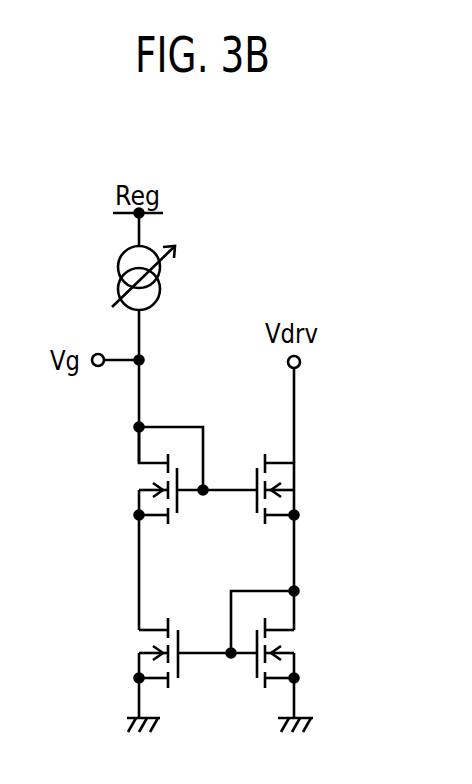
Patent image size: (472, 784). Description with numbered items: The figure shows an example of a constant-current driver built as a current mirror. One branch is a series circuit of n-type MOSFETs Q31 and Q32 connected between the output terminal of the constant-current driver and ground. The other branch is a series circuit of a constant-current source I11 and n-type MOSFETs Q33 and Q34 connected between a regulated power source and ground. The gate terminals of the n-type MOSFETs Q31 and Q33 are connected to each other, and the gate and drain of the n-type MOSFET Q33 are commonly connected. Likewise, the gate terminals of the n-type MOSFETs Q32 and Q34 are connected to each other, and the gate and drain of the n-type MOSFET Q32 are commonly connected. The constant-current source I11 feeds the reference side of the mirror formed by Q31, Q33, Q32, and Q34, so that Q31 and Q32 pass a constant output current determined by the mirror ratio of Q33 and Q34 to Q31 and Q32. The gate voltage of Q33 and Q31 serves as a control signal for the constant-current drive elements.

The constant-current source I11 is at (160, 278).
The n-type MOSFET Q31 is at (306, 487).
The n-type MOSFET Q32 is at (307, 652).
The n-type MOSFET Q33 is at (125, 475).
The n-type MOSFET Q34 is at (126, 652).